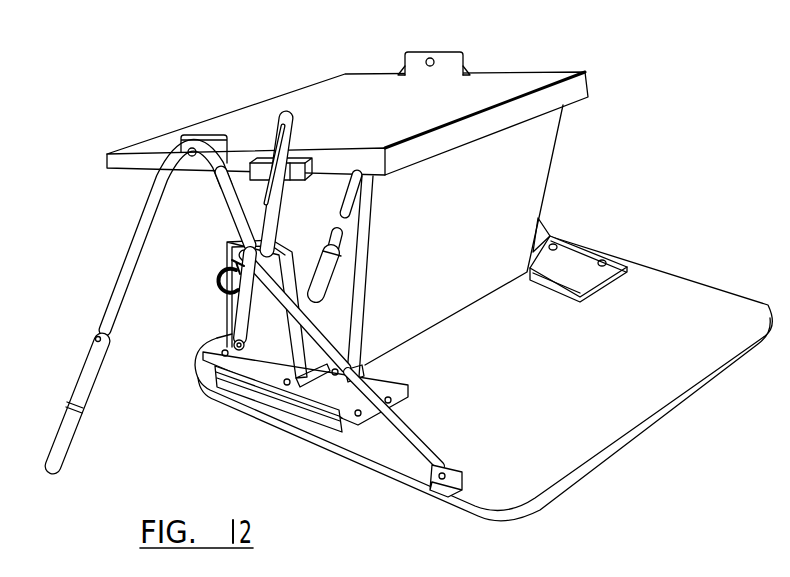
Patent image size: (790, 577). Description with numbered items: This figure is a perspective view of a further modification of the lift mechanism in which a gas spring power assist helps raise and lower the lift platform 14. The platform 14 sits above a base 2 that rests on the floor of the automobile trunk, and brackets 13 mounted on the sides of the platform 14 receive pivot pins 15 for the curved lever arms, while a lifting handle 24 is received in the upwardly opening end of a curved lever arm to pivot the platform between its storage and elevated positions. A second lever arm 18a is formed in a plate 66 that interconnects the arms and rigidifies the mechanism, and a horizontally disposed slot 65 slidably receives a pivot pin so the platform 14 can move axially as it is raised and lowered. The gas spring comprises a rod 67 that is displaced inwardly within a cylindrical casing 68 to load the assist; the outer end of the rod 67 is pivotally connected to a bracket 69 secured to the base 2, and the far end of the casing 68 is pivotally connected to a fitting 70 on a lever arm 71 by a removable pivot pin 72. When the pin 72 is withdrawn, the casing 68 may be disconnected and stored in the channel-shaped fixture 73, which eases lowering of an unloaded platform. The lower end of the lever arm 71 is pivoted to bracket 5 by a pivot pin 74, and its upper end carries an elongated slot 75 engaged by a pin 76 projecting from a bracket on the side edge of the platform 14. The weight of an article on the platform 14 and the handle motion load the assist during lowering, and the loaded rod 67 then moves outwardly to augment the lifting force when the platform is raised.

The base 2 is at (640, 403).
The outer wall 5 is at (226, 322).
The bracket 13 is at (447, 60).
The lift platform 14 is at (401, 117).
The pivot pin 15 is at (192, 158).
The lever arm 18a is at (372, 243).
The lifting handle 24 is at (334, 241).
The slot 65 is at (533, 275).
The plate 66 is at (486, 221).
The rod 67 is at (417, 445).
The cylindrical casing 68 is at (316, 329).
The bracket 69 is at (462, 477).
The fitting 70 is at (228, 300).
The lever arm 71 is at (258, 225).
The removable pivot pin 72 is at (238, 257).
The channel-shaped fixture 73 is at (80, 360).
The pivot pin 74 is at (203, 352).
The elongated slot 75 is at (290, 143).
The pin 76 is at (264, 157).